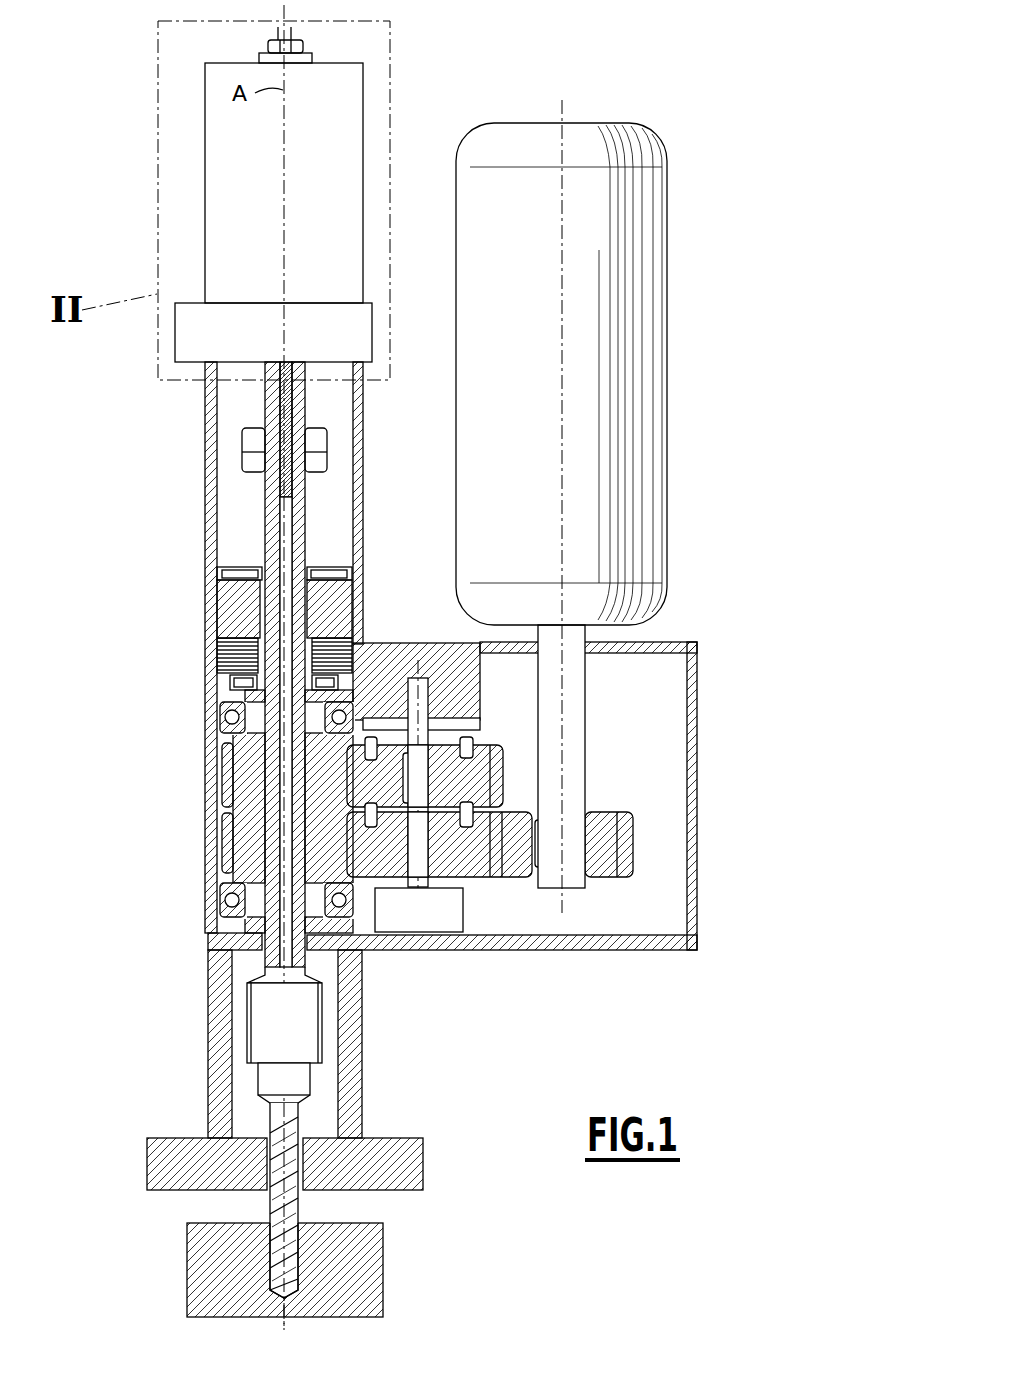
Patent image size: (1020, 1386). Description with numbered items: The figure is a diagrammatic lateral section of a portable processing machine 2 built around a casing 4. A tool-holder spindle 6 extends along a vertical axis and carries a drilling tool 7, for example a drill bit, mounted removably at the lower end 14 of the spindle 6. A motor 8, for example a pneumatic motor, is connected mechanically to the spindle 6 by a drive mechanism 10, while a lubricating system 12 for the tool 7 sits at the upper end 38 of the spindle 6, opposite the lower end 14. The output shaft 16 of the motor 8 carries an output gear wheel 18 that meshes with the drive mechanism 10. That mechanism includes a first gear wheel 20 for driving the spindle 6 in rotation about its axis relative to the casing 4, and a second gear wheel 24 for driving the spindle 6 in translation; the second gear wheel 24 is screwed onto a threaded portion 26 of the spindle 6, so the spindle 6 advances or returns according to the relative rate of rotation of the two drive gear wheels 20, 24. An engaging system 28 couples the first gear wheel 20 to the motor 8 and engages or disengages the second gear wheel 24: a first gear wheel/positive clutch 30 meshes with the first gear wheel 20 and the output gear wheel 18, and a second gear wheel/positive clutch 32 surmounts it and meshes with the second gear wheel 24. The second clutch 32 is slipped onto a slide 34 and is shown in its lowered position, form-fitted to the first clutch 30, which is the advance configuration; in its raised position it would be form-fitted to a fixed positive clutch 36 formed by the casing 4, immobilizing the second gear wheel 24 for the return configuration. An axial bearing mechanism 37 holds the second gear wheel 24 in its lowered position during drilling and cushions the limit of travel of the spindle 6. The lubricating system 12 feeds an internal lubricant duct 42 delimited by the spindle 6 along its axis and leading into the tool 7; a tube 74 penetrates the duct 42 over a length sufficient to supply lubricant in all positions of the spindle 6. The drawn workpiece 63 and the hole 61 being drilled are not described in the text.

The portable processing machine 2 is at (735, 728).
The casing 4 is at (637, 943).
The tool-holder spindle 6 is at (256, 552).
The drilling tool 7 is at (291, 1207).
The motor 8 is at (662, 417).
The drive mechanism 10 is at (474, 924).
The lubricating system 12 is at (218, 210).
The lower end of the spindle 14 is at (253, 1047).
The output shaft 16 is at (575, 740).
The output gear wheel 18 is at (605, 873).
The first gear wheel 20 is at (245, 863).
The second gear wheel 24 is at (245, 785).
The threaded portion 26 is at (268, 758).
The engaging system 28 is at (406, 905).
The first gear wheel/positive clutch 30 is at (477, 870).
The second gear wheel/positive clutch 32 is at (480, 782).
The slide 34 is at (478, 725).
The fixed positive clutch 36 is at (470, 697).
The axial bearing mechanism 37 is at (232, 610).
The upper end of the spindle 38 is at (250, 401).
The internal lubricant duct 42 is at (286, 510).
The drilled hole 61 is at (273, 1268).
The workpiece 63 is at (375, 1280).
The tube 74 is at (287, 497).